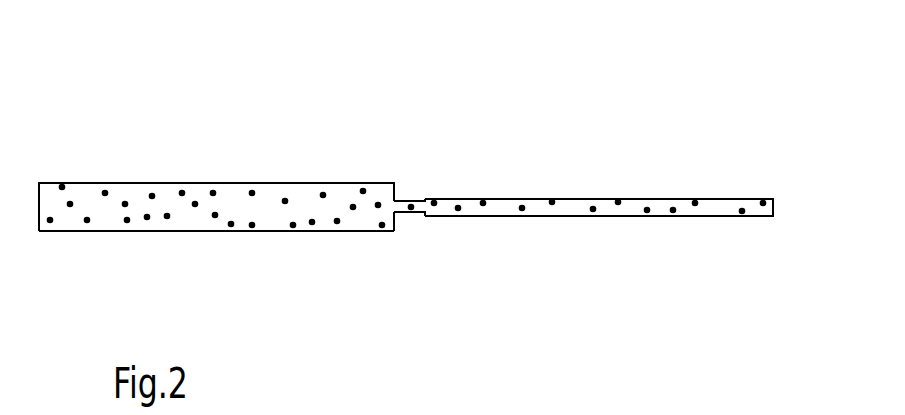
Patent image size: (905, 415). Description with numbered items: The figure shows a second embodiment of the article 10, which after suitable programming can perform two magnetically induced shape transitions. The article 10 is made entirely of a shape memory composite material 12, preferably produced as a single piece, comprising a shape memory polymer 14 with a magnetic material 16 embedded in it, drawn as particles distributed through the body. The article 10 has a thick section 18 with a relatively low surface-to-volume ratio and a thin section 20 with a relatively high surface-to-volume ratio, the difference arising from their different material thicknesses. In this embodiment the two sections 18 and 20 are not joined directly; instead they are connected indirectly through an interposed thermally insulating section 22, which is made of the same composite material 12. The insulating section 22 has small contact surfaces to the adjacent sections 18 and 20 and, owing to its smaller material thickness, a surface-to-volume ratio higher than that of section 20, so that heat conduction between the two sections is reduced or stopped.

The article 10 is at (460, 107).
The shape memory composite material 12 is at (338, 194).
The shape memory polymer 14 is at (298, 205).
The magnetic material 16 is at (150, 193).
The section with relatively low surface-to-volume ratio 18 is at (232, 249).
The section with relatively high surface-to-volume ratio 20 is at (559, 225).
The thermally insulating section 22 is at (411, 216).